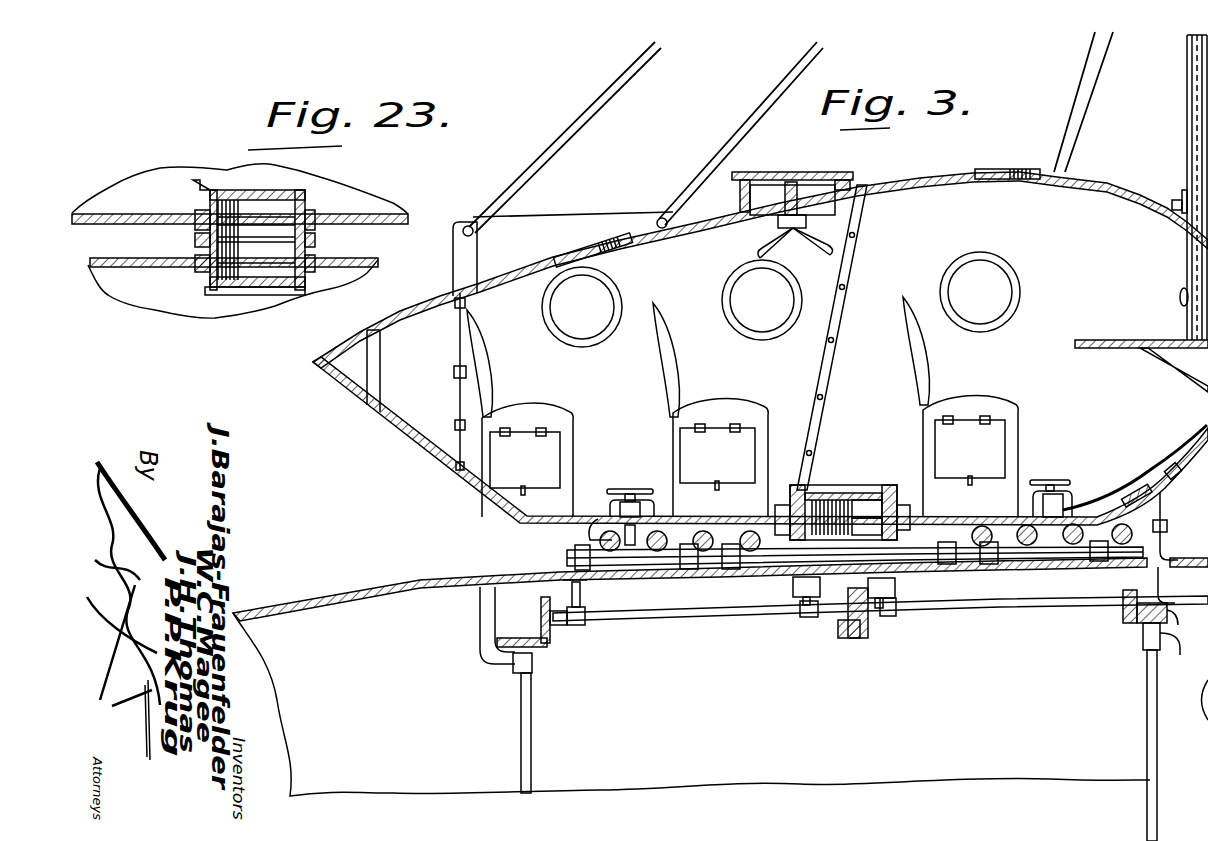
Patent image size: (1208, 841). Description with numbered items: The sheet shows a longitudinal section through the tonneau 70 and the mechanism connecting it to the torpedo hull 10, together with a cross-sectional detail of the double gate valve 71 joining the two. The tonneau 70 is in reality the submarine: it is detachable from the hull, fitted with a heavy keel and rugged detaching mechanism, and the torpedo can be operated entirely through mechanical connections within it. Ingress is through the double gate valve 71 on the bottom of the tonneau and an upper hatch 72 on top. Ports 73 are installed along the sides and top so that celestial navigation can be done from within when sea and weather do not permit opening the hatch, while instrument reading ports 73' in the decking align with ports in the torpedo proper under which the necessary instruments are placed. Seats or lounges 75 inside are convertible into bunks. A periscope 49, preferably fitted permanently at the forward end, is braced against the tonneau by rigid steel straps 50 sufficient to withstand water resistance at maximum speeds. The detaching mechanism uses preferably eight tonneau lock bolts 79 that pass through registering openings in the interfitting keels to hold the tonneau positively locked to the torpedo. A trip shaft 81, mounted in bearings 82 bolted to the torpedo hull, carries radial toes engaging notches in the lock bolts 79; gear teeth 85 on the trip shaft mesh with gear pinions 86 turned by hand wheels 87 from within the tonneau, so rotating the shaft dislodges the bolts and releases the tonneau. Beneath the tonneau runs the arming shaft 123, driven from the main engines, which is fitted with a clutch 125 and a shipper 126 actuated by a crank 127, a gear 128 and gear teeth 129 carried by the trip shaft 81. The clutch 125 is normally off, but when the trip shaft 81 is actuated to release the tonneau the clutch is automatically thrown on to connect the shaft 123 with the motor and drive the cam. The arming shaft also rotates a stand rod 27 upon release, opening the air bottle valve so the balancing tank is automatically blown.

In FIG. 23, the hull bottom plating 10 is at (357, 258).
In FIG. 3, the hull bottom plating 10 is at (346, 594).
In FIG. 3, the stand rod 27 is at (1146, 740).
In FIG. 3, the periscope 49 is at (1195, 100).
In FIG. 3, the rigid steel straps 50 is at (603, 107).
In FIG. 23, the tonneau 70 is at (353, 214).
In FIG. 3, the tonneau 70 is at (925, 177).
In FIG. 23, the double gate valve 71 is at (315, 237).
In FIG. 3, the double gate valve 71 is at (897, 505).
In FIG. 3, the upper hatch 72 is at (814, 170).
In FIG. 3, the ports 73 is at (791, 252).
In FIG. 3, the instrument reading ports 73' is at (1135, 467).
In FIG. 3, the seats or lounges 75 is at (574, 440).
In FIG. 3, the tonneau lock bolts 79 is at (598, 517).
In FIG. 3, the trip shaft 81 is at (750, 558).
In FIG. 3, the bearings 82 is at (593, 550).
In FIG. 3, the gear teeth 85 is at (642, 568).
In FIG. 3, the gear pinions 86 is at (658, 510).
In FIG. 3, the hand wheels 87 is at (628, 489).
In FIG. 3, the arming shaft 123 is at (967, 609).
In FIG. 3, the clutch 125 is at (863, 632).
In FIG. 3, the shipper 126 is at (883, 616).
In FIG. 3, the crank 127 is at (867, 588).
In FIG. 3, the gear 128 is at (866, 527).
In FIG. 3, the gear teeth 129 is at (865, 509).